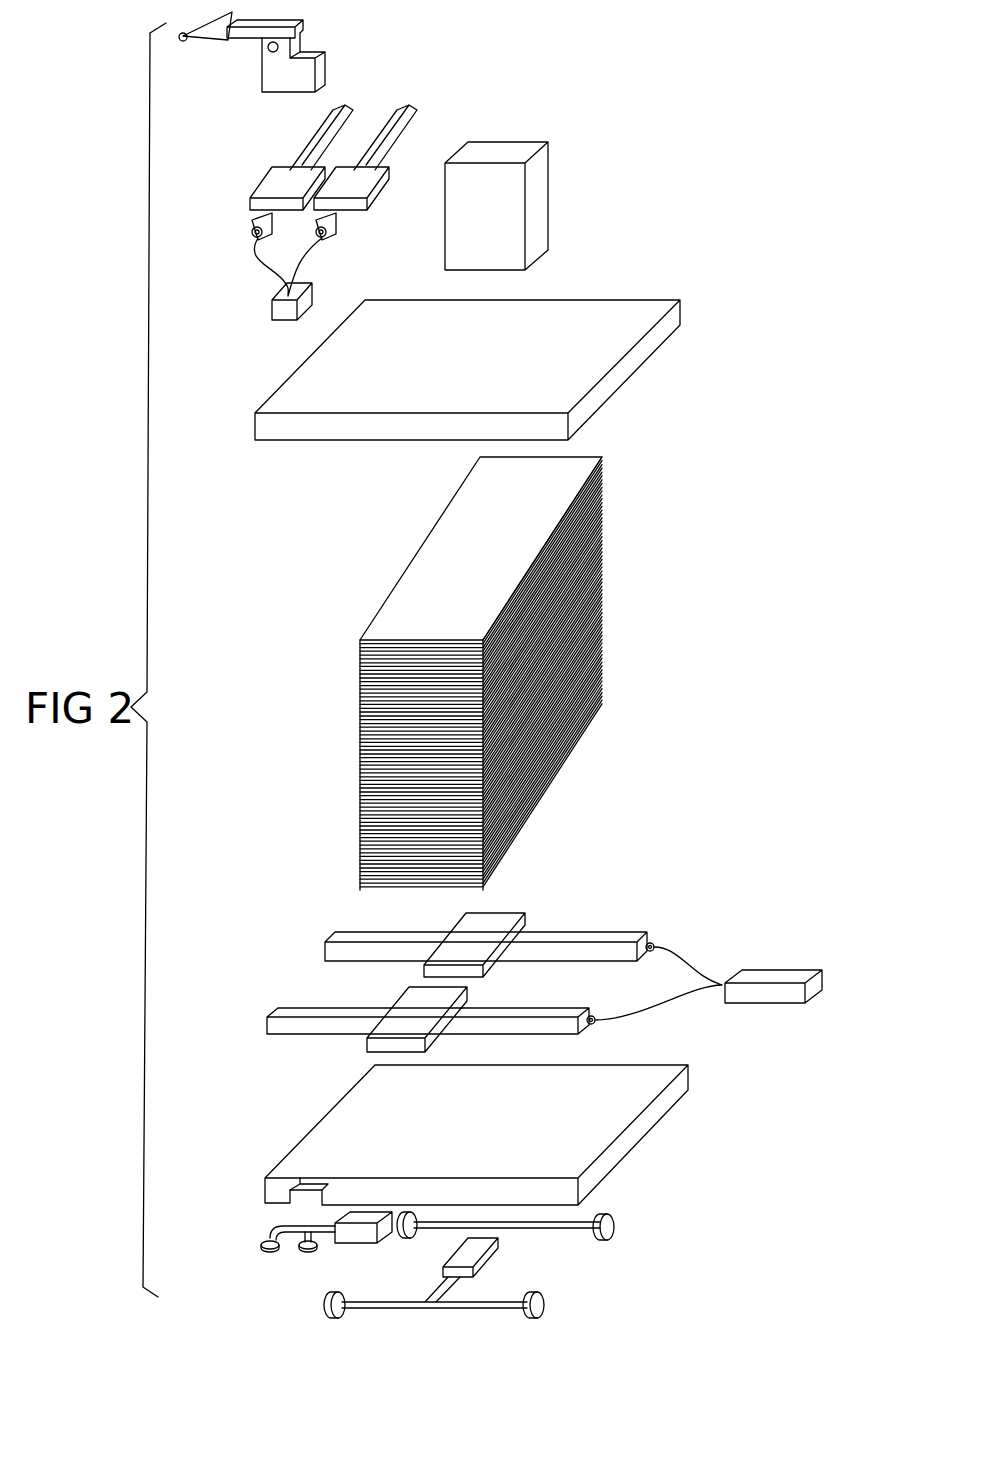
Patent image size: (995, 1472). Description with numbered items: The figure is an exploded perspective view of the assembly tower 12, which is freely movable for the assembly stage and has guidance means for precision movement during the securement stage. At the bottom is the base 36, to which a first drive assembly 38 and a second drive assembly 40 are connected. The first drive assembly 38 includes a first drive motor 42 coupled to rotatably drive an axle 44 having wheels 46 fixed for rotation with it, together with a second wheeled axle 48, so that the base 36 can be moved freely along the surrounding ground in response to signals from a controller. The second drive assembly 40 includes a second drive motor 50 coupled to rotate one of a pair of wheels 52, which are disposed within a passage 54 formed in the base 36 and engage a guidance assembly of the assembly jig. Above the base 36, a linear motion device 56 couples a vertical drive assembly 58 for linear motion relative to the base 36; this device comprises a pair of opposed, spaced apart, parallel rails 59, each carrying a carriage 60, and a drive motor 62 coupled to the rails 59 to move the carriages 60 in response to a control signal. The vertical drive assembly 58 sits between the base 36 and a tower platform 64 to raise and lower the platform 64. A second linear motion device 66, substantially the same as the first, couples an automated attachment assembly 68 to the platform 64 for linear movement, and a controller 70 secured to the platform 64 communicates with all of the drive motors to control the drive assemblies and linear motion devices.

The assembly tower 12 is at (491, 673).
The base 36 is at (478, 1135).
The first drive assembly 38 is at (436, 1274).
The second drive assembly 40 is at (308, 1264).
The first drive motor 42 is at (473, 1252).
The axle 44 is at (430, 1310).
The wheels 46 is at (332, 1318).
The second wheeled axle 48 is at (570, 1230).
The second drive motor 50 is at (360, 1237).
The wheels 52 is at (262, 1244).
The passage 54 is at (297, 1190).
The linear motion device 56 is at (522, 956).
The vertical drive assembly 58 is at (630, 612).
The rails 59 is at (335, 938).
The carriage 60 is at (505, 918).
The drive motor 62 is at (772, 975).
The tower platform 64 is at (640, 310).
The second linear motion device 66 is at (228, 255).
The automated attachment assembly 68 is at (246, 82).
The controller 70 is at (580, 160).